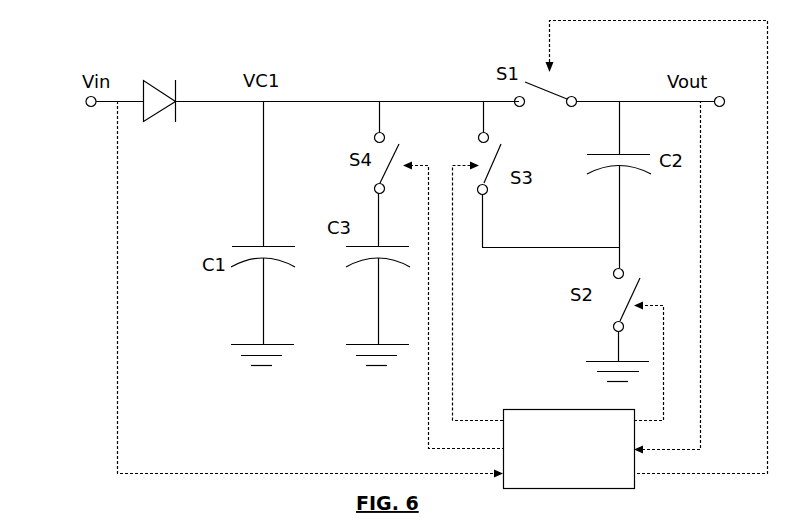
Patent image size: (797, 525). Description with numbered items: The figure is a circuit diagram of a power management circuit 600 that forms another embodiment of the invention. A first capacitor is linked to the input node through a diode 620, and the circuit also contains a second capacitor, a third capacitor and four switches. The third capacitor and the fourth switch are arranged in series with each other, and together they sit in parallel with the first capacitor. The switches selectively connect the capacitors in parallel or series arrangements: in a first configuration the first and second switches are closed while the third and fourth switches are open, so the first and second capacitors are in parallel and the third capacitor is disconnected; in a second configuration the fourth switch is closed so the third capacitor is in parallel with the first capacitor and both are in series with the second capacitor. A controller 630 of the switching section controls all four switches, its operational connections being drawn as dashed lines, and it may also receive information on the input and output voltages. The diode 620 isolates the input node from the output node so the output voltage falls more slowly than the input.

The power management circuit 600 is at (90, 206).
The diode 620 is at (161, 120).
The controller 630 is at (569, 449).